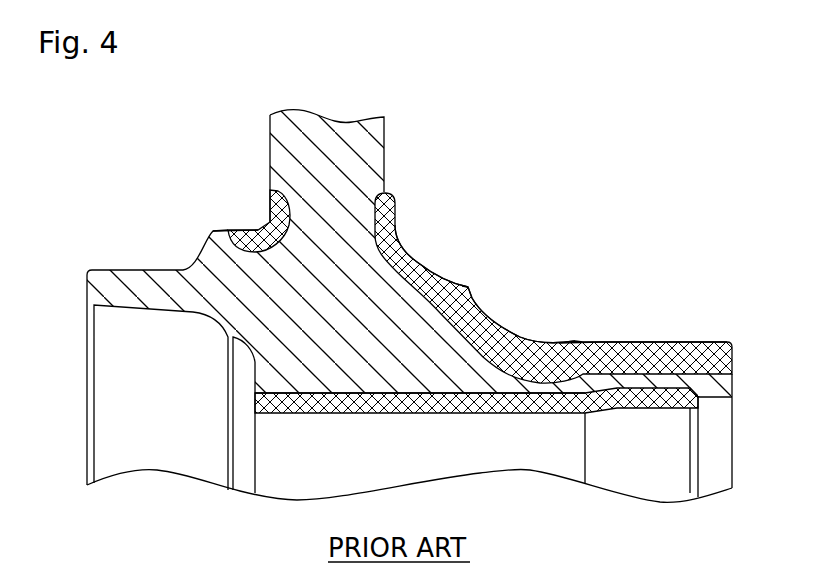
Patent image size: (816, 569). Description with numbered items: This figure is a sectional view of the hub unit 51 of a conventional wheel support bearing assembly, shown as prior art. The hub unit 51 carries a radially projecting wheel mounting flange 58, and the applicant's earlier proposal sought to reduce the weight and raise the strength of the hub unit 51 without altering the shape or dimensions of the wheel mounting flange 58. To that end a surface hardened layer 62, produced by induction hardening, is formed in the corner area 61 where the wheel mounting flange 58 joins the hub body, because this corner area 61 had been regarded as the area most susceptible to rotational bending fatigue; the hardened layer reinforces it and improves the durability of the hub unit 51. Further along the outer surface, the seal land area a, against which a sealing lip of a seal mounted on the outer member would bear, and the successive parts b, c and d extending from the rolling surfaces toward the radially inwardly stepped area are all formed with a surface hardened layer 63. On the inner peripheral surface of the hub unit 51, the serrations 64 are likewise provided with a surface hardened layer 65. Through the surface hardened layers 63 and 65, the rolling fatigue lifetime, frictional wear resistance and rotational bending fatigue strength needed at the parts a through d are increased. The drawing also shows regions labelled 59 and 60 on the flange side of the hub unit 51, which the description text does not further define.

The hub unit 51 is at (83, 401).
The wheel mounting flange 58 is at (329, 135).
The rib 59 is at (259, 159).
The flange 60 is at (140, 283).
The corner area 61 is at (259, 224).
The surface hardened layer 62 is at (287, 223).
The surface hardened layer 63 is at (457, 293).
The serrations 64 is at (384, 416).
The surface hardened layer 65 is at (327, 407).
The seal land area a is at (417, 265).
The part extending from rolling surface to stepped area b is at (515, 329).
The part extending from rolling surface to stepped area c is at (582, 339).
The part extending from rolling surface to stepped area d is at (649, 340).